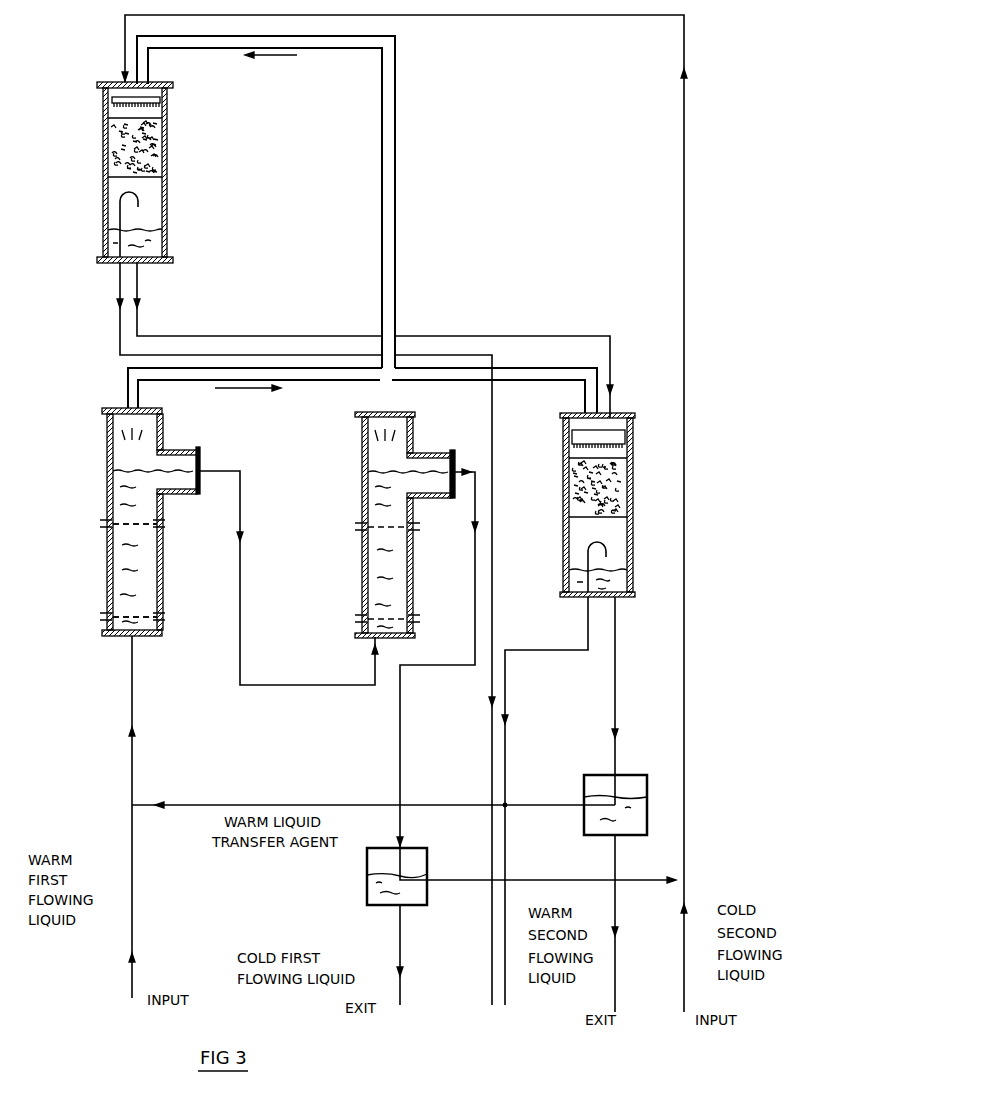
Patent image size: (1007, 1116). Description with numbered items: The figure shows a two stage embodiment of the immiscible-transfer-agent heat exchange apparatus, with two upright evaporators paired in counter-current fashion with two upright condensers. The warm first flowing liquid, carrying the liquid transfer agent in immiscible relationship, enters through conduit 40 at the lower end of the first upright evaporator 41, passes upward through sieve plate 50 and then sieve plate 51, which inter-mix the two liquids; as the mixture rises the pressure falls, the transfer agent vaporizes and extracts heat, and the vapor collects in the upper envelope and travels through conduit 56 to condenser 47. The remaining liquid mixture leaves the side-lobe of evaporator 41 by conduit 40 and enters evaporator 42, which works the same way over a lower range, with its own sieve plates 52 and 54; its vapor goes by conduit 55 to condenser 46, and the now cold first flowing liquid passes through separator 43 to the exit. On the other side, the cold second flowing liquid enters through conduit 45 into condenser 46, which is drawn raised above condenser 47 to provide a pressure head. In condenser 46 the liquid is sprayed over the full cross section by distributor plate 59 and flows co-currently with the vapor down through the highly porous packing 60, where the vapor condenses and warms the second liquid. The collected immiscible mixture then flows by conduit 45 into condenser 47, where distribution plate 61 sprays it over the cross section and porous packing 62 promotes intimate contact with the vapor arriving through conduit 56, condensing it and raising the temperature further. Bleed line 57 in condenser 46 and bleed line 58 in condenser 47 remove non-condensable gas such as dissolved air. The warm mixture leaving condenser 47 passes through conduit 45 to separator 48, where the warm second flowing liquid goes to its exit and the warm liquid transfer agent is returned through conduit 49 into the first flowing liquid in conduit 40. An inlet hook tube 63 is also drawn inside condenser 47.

The conduit 40 is at (400, 949).
The upright evaporator 41 is at (104, 555).
The upright evaporator 42 is at (356, 505).
The separator 43 is at (427, 860).
The conduit 45 is at (238, 334).
The condenser 46 is at (100, 184).
The condenser 47 is at (638, 532).
The separator 48 is at (647, 787).
The conduit 49 is at (238, 801).
The sieve plate 50 is at (145, 616).
The sieve plate 51 is at (140, 522).
The sieve plate 52 is at (392, 620).
The sieve plate 54 is at (397, 527).
The conduit 55 is at (395, 207).
The conduit 56 is at (505, 370).
The bleed line 57 is at (120, 203).
The bleed line 58 is at (582, 621).
The distributor plate 59 is at (112, 100).
The packing 60 is at (106, 132).
The distribution plate 61 is at (612, 428).
The porous packing 62 is at (628, 475).
The inlet hook tube 63 is at (606, 548).